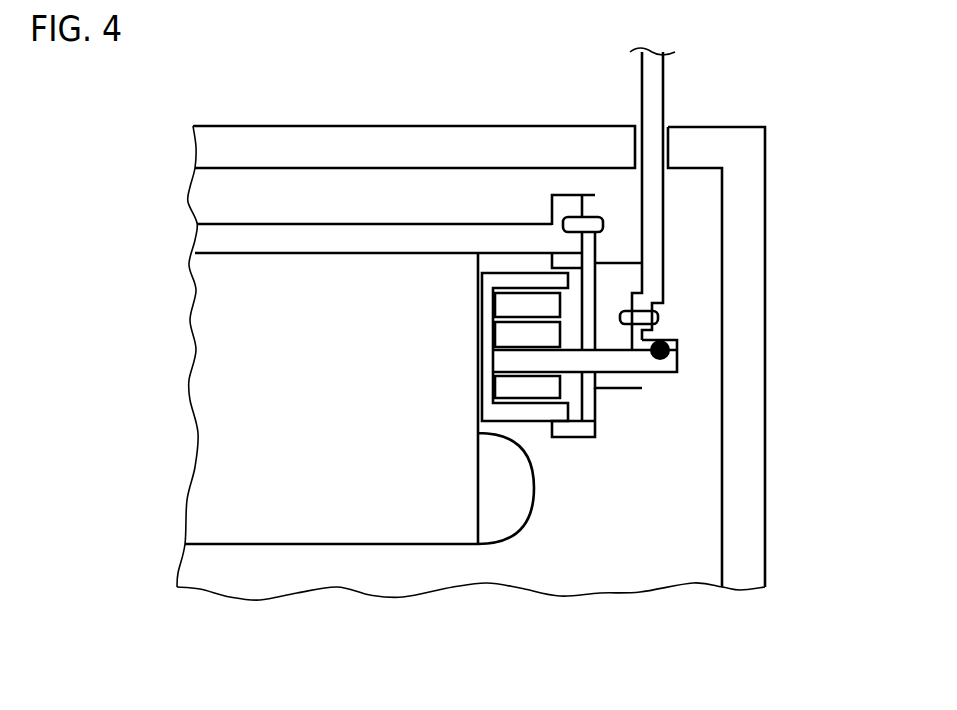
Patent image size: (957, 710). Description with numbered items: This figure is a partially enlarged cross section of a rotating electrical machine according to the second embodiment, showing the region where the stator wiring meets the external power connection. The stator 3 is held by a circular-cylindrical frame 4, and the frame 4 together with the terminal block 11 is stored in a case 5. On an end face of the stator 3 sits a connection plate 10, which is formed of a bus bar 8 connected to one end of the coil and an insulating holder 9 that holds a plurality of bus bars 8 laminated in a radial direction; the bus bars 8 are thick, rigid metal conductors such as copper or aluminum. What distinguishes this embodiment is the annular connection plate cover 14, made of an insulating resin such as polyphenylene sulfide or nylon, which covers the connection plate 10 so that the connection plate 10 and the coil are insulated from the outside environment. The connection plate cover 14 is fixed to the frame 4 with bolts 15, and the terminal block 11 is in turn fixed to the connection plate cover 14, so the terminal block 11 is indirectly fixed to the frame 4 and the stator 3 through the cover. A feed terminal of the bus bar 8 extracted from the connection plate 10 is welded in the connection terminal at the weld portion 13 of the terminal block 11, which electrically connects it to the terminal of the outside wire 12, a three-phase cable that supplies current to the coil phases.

The stator 3 is at (298, 544).
The frame 4 is at (213, 224).
The case 5 is at (248, 126).
The bus bar 8 is at (522, 303).
The insulating holder 9 is at (487, 282).
The connection plate 10 is at (502, 75).
The terminal block 11 is at (623, 263).
The outside wire 12 is at (663, 87).
The weld portion 13 is at (668, 355).
The connection plate cover 14 is at (596, 420).
The bolt 15 is at (573, 218).